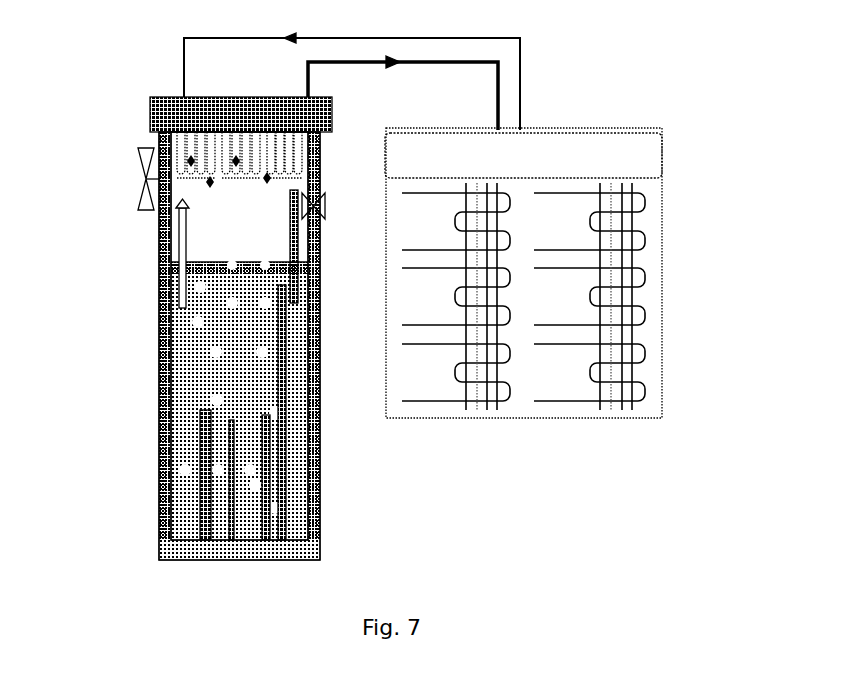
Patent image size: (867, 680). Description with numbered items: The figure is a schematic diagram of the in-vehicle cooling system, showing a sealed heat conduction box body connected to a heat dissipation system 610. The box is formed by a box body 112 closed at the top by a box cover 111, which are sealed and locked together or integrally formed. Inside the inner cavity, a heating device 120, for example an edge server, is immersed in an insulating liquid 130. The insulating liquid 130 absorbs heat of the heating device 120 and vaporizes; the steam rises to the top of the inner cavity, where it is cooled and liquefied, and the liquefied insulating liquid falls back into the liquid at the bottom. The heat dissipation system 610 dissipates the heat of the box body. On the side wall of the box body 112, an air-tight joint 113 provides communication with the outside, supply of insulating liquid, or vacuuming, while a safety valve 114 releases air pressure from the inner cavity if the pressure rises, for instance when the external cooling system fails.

The box cover 111 is at (332, 104).
The box body 112 is at (312, 493).
The air-tight joint 113 is at (328, 196).
The safety valve 114 is at (150, 180).
The heating device 120 is at (203, 458).
The insulating liquid 130 is at (195, 362).
The heat dissipation system 610 is at (637, 162).